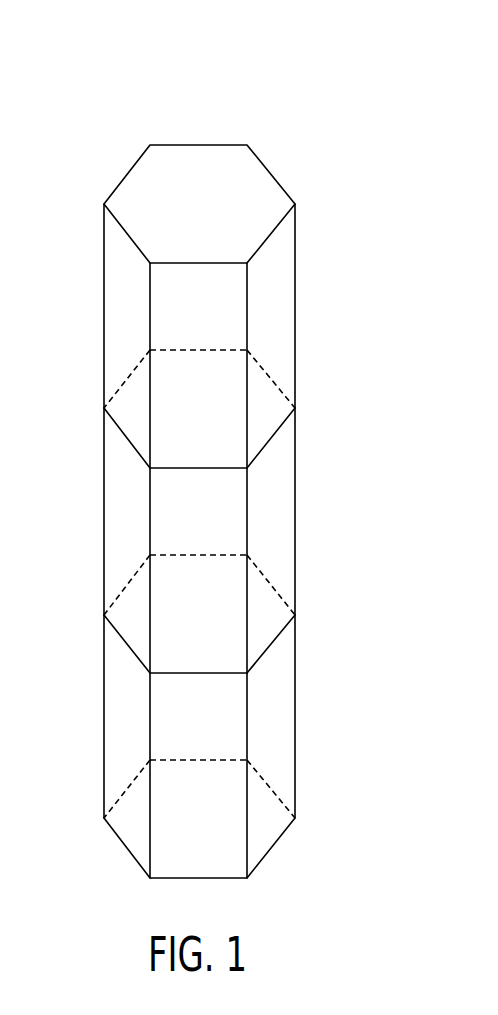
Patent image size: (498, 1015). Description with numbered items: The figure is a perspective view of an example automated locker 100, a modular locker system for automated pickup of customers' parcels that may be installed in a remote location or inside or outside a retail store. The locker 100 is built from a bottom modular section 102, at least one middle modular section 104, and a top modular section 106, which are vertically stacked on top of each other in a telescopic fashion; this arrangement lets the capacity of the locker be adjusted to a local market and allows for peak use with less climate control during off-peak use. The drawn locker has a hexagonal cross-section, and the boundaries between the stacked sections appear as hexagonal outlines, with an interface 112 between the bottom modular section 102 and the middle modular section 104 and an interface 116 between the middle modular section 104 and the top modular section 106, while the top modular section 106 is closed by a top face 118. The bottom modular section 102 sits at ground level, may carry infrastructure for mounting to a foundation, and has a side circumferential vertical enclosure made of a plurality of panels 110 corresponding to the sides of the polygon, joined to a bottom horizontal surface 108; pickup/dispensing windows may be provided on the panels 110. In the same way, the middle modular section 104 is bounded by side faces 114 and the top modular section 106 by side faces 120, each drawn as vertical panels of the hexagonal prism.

The locker 100 is at (84, 94).
The bottom modular section 102 is at (310, 789).
The middle modular section 104 is at (310, 470).
The top modular section 106 is at (310, 251).
The bottom horizontal surface 108 is at (135, 832).
The panels 110 is at (120, 710).
The interface between first and second segments 112 is at (260, 608).
The side faces of second segment 114 is at (120, 520).
The interface between second and third segments 116 is at (135, 402).
The top face of third segment 118 is at (257, 183).
The side faces of third segment 120 is at (120, 300).